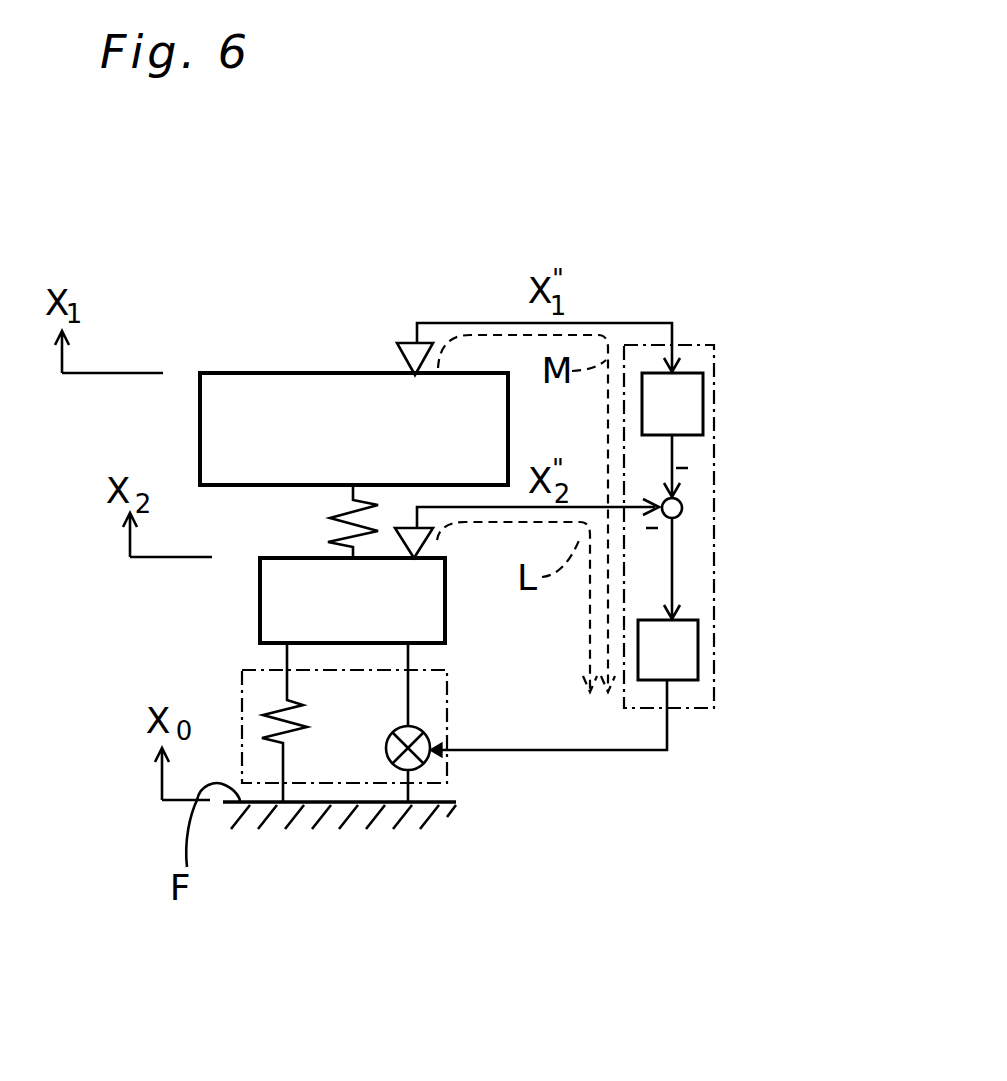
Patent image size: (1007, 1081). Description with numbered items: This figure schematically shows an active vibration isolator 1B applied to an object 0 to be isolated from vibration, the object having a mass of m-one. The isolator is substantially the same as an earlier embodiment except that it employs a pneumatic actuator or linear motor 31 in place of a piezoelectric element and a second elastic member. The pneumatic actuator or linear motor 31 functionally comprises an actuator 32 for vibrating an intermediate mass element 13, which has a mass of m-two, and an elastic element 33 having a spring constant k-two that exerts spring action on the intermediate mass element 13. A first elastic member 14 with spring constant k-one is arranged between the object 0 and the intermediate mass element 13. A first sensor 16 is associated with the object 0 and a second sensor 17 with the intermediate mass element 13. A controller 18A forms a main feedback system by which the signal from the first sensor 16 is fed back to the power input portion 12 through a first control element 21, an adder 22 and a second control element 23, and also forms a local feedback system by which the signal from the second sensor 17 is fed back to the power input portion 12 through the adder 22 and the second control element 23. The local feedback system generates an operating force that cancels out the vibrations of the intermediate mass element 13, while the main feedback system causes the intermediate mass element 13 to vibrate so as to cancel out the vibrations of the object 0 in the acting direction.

The object to be isolated from vibration 0 is at (257, 373).
The first sensor 16 is at (405, 358).
The active vibration isolator 1B is at (673, 487).
The first control element 21 is at (697, 373).
The adder 22 is at (683, 503).
The first elastic member 14 is at (353, 491).
The intermediate mass element 13 is at (268, 590).
The second sensor 17 is at (437, 542).
The power input portion 12 is at (437, 753).
The pneumatic actuator or linear motor 31 is at (450, 783).
The second control element 23 is at (643, 677).
The controller 18A is at (700, 710).
The elastic element 33 is at (297, 740).
The actuator 32 is at (405, 772).